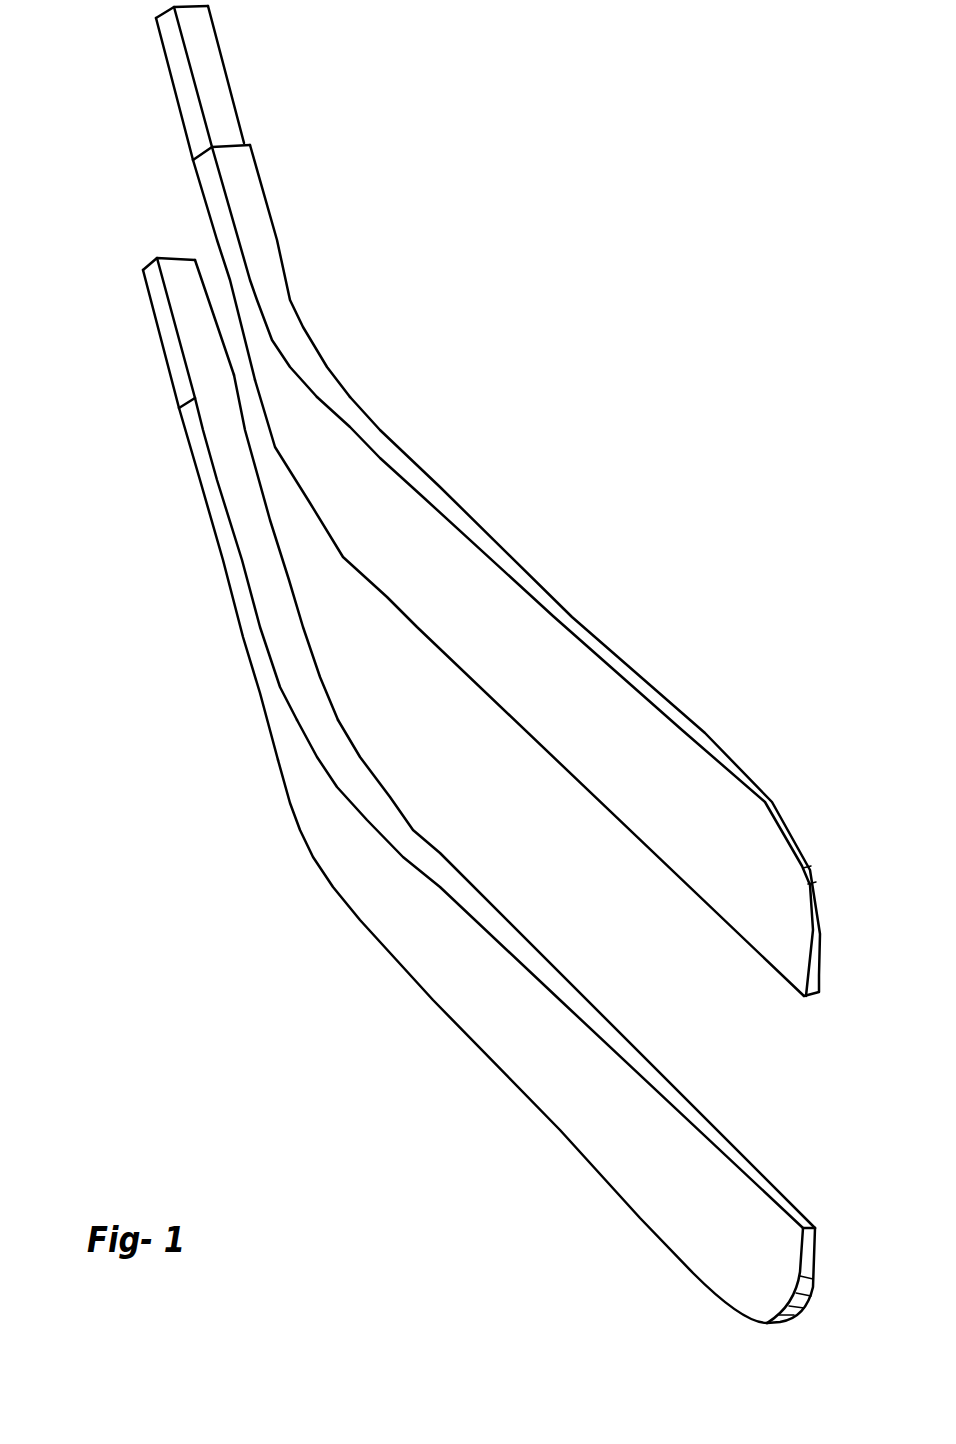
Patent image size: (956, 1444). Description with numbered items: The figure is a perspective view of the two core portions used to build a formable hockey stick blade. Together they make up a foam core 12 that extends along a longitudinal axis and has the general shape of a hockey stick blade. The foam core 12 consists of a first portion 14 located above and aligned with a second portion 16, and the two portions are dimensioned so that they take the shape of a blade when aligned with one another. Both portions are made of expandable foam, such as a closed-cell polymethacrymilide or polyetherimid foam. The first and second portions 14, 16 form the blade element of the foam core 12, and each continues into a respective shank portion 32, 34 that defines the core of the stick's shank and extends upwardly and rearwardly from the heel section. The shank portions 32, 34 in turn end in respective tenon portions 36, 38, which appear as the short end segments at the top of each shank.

The foam core 12 is at (640, 440).
The first portion 14 is at (643, 759).
The second portion 16 is at (647, 1144).
The shank portion 32 is at (273, 245).
The shank portion 34 is at (222, 537).
The tenon portion 36 is at (213, 62).
The tenon portion 38 is at (172, 348).